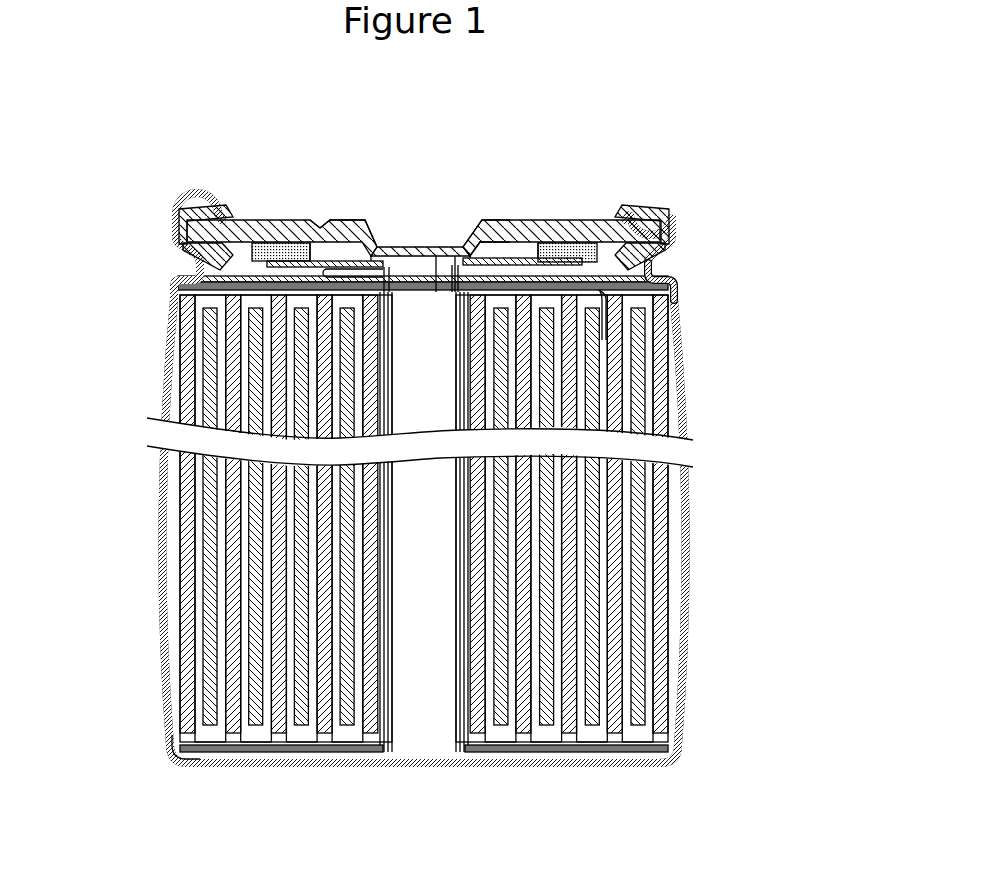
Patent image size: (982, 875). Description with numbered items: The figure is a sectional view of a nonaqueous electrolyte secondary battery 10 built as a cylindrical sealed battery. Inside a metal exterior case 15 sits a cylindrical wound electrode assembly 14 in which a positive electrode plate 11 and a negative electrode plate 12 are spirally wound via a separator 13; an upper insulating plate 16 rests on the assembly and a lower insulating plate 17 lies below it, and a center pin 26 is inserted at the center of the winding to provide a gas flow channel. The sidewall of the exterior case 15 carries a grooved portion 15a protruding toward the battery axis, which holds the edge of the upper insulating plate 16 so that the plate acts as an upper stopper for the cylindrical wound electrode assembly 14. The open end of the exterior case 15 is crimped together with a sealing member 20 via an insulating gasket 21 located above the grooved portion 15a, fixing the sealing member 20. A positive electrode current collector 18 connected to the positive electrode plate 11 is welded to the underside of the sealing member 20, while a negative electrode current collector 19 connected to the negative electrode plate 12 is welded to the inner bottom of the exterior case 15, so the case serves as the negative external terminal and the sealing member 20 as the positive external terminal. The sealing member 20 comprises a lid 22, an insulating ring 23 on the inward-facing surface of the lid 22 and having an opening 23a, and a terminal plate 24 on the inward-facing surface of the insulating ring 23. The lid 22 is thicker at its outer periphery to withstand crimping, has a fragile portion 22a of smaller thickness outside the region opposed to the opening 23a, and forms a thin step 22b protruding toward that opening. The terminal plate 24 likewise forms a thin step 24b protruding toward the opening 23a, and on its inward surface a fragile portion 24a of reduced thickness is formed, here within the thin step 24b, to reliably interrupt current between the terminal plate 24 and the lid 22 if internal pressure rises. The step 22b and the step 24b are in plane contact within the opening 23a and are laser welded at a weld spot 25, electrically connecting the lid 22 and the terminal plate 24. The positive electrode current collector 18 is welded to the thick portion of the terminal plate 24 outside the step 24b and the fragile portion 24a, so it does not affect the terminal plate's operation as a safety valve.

The nonaqueous electrolyte secondary battery 10 is at (128, 109).
The positive electrode plate 11 is at (205, 590).
The negative electrode plate 12 is at (185, 651).
The separator 13 is at (182, 692).
The cylindrical wound electrode assembly 14 is at (677, 633).
The exterior case 15 is at (680, 575).
The grooved portion 15a is at (672, 276).
The upper insulating plate 16 is at (172, 278).
The lower insulating plate 17 is at (668, 749).
The positive electrode current collector 18 is at (606, 302).
The negative electrode current collector 19 is at (175, 749).
The sealing member 20 is at (374, 206).
The insulating gasket 21 is at (185, 224).
The lid 22 is at (270, 221).
The fragile portion 22a is at (322, 214).
The thin step 22b is at (450, 250).
The insulating ring 23 is at (661, 228).
The opening 23a is at (518, 241).
The terminal plate 24 is at (305, 268).
The fragile portion 24a is at (383, 274).
The thin step 24b is at (442, 282).
The weld spot 25 is at (437, 262).
The center pin 26 is at (440, 735).